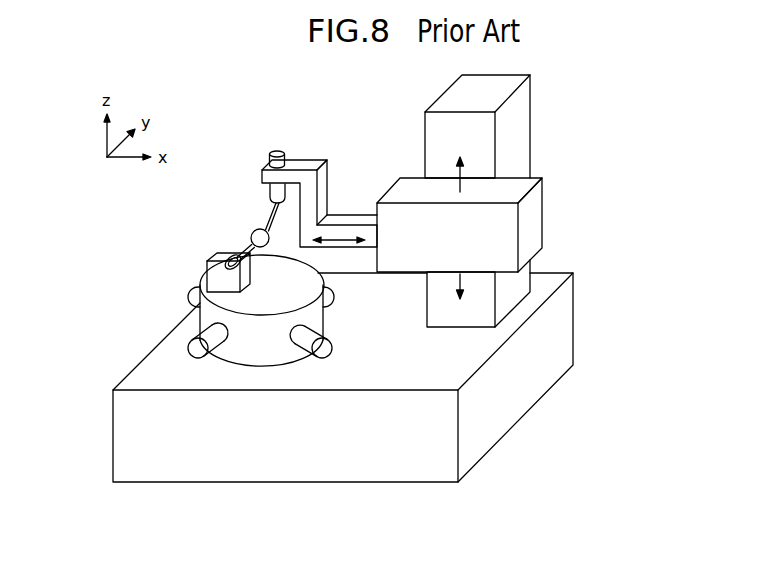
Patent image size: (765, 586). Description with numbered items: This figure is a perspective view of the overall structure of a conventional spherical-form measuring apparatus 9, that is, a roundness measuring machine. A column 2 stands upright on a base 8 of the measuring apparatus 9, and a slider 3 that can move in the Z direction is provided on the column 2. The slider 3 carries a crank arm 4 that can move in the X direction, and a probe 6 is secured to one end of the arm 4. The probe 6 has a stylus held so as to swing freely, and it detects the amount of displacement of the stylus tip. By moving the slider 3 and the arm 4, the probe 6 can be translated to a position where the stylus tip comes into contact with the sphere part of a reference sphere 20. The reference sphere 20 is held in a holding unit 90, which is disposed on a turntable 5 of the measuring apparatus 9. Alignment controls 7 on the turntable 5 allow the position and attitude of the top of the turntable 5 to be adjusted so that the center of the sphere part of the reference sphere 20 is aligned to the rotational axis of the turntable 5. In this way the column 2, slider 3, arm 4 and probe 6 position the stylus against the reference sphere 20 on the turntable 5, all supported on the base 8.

The column 2 is at (515, 132).
The slider 3 is at (530, 217).
The crank arm 4 is at (340, 233).
The turntable 5 is at (252, 302).
The probe 6 is at (273, 218).
The alignment controls 7 is at (320, 352).
The base 8 is at (337, 473).
The measuring apparatus 9 is at (524, 484).
The reference sphere 20 is at (252, 236).
The holding unit 90 is at (217, 273).